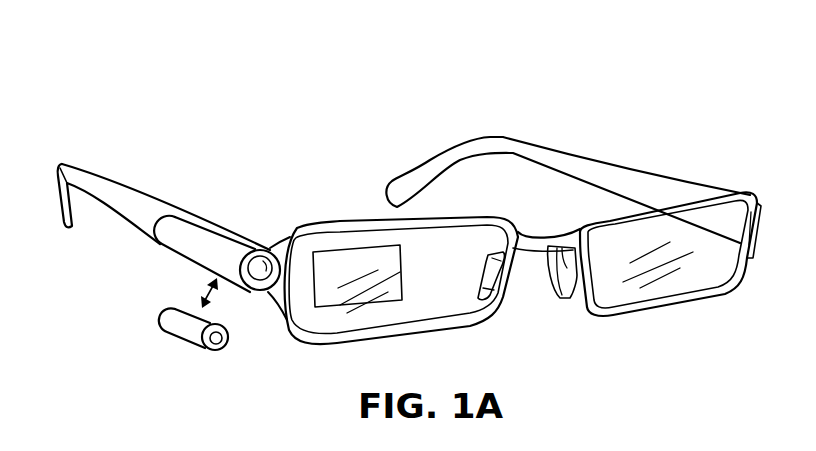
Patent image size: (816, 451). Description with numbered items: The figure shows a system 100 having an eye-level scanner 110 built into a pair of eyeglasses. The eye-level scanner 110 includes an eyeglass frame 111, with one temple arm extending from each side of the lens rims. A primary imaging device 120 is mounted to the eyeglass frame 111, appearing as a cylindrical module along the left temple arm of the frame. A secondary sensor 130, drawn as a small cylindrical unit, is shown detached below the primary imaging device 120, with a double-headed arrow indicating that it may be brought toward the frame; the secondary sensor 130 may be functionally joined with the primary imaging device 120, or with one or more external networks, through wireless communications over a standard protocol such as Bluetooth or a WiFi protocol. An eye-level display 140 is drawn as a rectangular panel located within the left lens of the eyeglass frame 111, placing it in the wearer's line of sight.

The system 100 is at (599, 47).
The eye-level scanner 110 is at (626, 105).
The eyeglass frame 111 is at (643, 180).
The primary imaging device 120 is at (213, 237).
The secondary sensor 130 is at (185, 343).
The eye-level display 140 is at (338, 253).